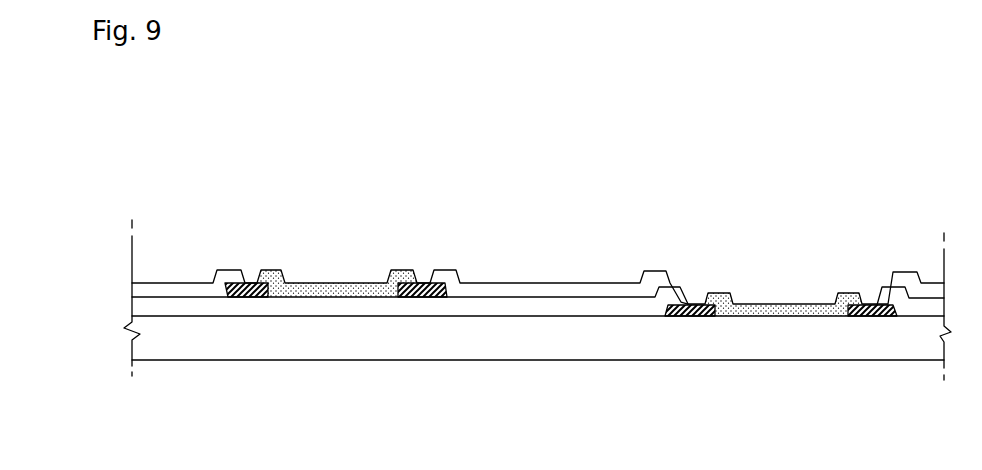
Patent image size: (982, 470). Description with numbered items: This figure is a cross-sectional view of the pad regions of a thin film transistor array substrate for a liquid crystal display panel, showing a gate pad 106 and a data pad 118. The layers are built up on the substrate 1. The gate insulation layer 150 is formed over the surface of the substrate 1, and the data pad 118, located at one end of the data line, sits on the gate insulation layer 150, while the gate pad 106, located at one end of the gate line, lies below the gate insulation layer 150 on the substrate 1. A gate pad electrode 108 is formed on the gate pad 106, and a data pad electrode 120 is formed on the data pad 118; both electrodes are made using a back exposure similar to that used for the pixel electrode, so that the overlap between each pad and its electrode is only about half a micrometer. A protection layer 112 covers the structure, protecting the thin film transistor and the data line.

The substrate 1 is at (553, 349).
The gate pad 106 is at (705, 317).
The gate pad electrode 108 is at (773, 304).
The protection layer 112 is at (565, 287).
The data pad 118 is at (412, 296).
The data pad electrode 120 is at (345, 285).
The gate insulation layer 150 is at (493, 305).